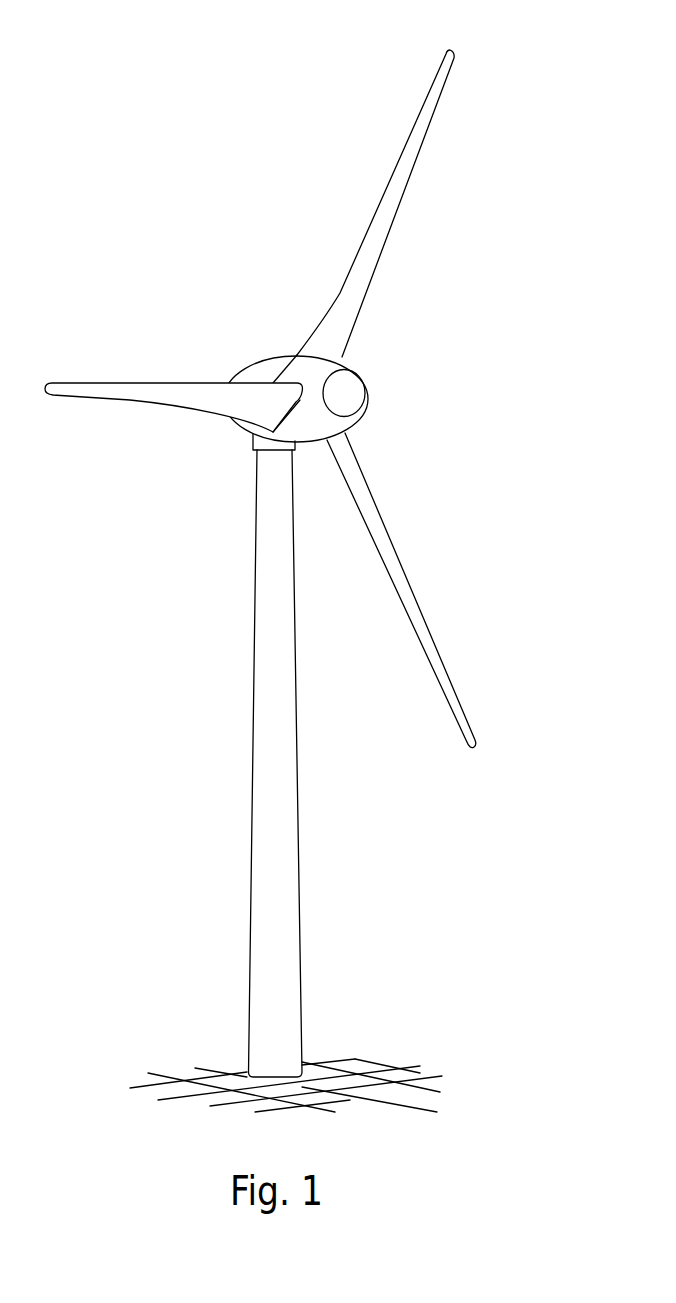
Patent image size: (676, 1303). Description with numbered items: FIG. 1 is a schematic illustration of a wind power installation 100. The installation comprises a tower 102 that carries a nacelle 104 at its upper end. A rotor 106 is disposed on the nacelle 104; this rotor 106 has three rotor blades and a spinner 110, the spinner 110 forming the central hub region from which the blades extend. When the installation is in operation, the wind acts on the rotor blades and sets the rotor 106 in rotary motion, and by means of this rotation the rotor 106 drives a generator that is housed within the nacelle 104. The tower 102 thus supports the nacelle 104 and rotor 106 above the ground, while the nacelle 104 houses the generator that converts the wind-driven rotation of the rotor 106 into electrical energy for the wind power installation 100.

The wind power installation 100 is at (212, 506).
The tower 102 is at (292, 847).
The nacelle 104 is at (260, 370).
The rotor 106 is at (309, 399).
The spinner 110 is at (352, 394).